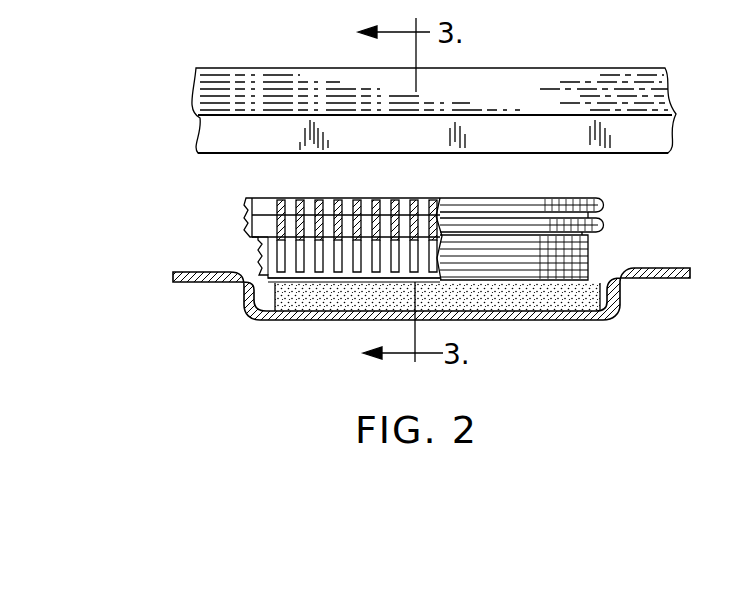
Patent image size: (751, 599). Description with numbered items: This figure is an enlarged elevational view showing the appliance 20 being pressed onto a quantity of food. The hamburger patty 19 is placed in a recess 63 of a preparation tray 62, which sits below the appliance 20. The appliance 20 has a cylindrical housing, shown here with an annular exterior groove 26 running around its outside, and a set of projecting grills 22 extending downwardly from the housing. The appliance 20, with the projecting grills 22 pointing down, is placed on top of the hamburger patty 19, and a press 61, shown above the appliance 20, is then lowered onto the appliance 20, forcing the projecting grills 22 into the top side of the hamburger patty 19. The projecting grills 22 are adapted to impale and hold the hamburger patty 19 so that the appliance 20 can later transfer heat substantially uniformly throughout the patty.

The press 61 is at (645, 142).
The annular exterior groove 26 is at (546, 199).
The appliance 20 is at (476, 265).
The projecting grills 22 is at (339, 283).
The hamburger patty 19 is at (290, 283).
The recess 63 is at (590, 320).
The preparation tray 62 is at (642, 281).